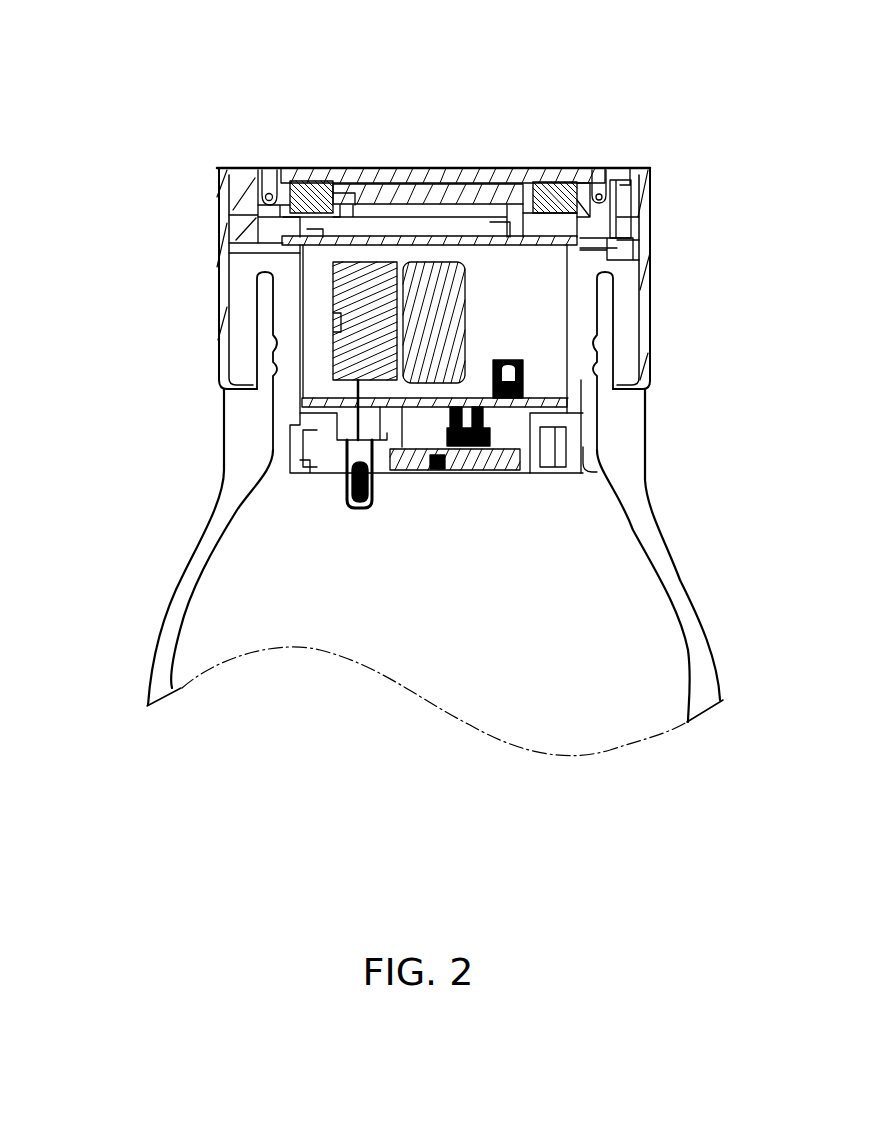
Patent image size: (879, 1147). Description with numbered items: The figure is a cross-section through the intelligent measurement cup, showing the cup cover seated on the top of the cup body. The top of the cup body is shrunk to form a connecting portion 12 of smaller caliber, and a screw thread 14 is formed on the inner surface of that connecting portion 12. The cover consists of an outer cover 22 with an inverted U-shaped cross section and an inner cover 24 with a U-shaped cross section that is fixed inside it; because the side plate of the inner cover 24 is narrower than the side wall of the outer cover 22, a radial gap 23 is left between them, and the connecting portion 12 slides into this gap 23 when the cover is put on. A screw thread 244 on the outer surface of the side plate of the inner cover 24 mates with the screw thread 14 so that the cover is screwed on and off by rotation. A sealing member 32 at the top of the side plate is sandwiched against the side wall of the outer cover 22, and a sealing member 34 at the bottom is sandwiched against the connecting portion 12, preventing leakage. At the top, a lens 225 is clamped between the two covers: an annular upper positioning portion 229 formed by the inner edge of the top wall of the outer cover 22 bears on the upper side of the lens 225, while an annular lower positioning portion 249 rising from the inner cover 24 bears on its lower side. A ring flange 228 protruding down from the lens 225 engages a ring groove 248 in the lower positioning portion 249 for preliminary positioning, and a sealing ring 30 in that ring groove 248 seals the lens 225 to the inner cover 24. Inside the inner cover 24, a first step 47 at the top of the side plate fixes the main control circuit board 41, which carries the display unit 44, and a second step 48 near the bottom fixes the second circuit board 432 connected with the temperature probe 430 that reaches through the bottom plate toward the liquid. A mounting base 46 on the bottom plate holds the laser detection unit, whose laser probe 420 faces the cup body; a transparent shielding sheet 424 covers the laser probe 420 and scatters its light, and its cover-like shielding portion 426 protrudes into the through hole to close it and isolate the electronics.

The connecting portion 12 is at (620, 287).
The screw thread 14 is at (648, 338).
The outer cover 22 is at (228, 295).
The gap 23 is at (243, 330).
The inner cover 24 is at (272, 405).
The sealing ring 30 is at (605, 186).
The sealing member 32 is at (228, 254).
The sealing member 34 is at (222, 492).
The main control circuit board 41 is at (343, 167).
The display unit 44 is at (482, 194).
The mounting base 46 is at (527, 473).
The first step 47 is at (625, 256).
The second step 48 is at (585, 425).
The lens 225 is at (408, 177).
The ring flange 228 is at (250, 183).
The upper positioning portion 229 is at (263, 167).
The screw thread 244 is at (613, 373).
The ring groove 248 is at (245, 200).
The lower positioning portion 249 is at (640, 207).
The laser probe 420 is at (452, 476).
The shielding sheet 424 is at (490, 475).
The shielding portion 426 is at (403, 476).
The temperature probe 430 is at (343, 490).
The second circuit board 432 is at (520, 396).